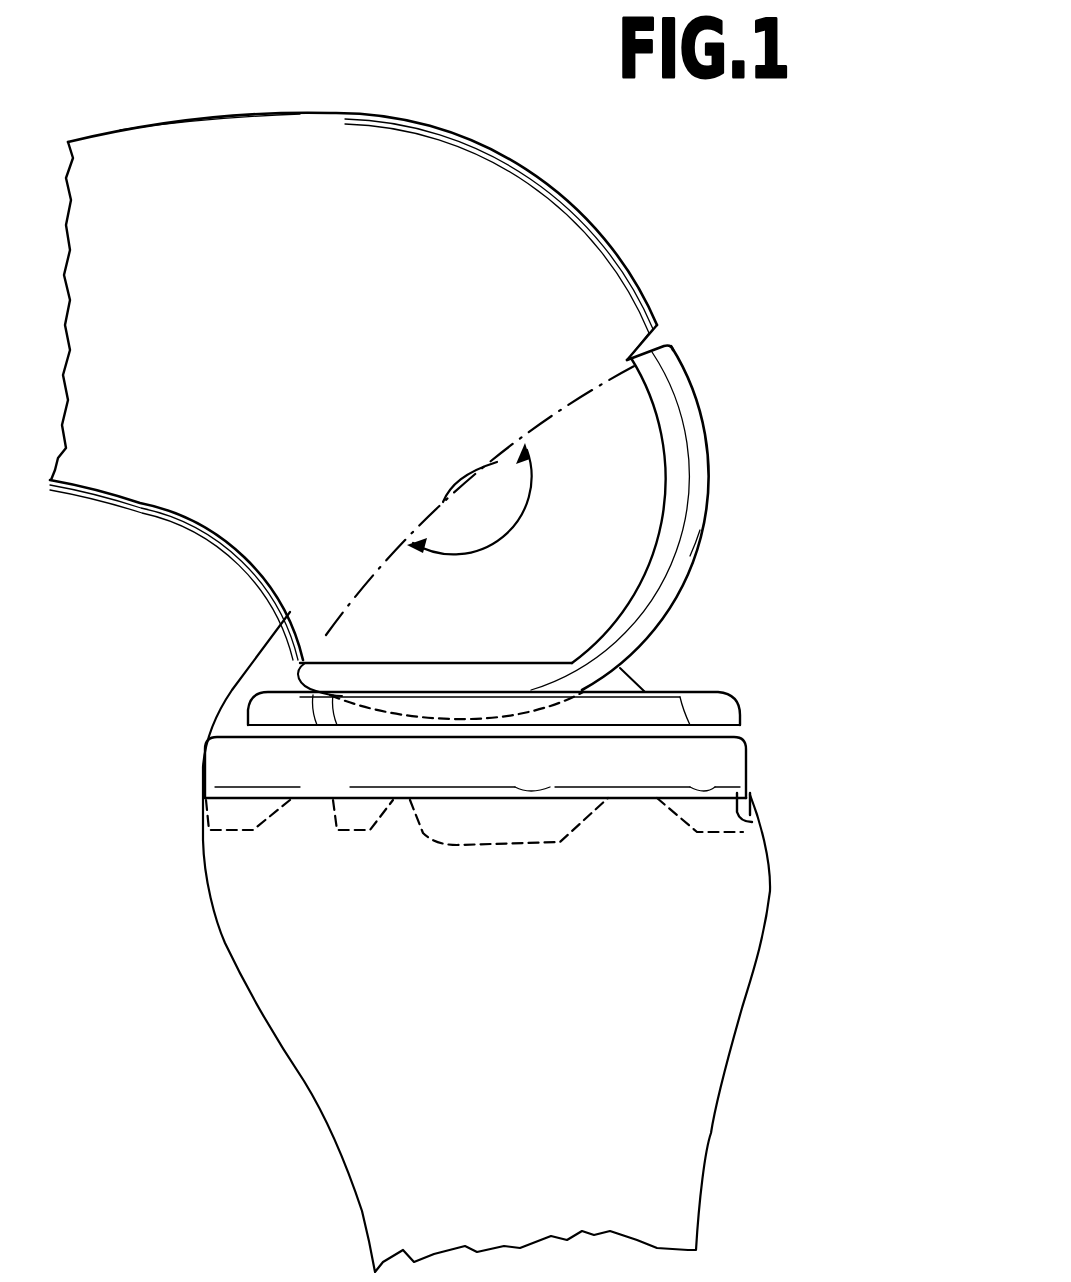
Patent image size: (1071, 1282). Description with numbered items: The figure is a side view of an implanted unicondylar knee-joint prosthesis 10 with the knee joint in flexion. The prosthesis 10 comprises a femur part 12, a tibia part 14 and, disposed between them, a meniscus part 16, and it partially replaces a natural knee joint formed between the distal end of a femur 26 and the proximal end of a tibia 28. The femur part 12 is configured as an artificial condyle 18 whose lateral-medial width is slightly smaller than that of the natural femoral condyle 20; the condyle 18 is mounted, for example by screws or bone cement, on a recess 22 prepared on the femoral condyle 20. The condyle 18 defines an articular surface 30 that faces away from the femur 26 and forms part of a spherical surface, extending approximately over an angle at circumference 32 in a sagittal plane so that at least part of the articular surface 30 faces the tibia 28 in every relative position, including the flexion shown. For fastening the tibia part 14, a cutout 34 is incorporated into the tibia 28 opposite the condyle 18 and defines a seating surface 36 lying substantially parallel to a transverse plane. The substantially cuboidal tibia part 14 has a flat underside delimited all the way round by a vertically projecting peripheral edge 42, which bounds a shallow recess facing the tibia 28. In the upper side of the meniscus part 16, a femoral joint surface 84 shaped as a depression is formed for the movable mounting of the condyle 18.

The knee-joint prosthesis 10 is at (711, 615).
The femur part 12 is at (706, 420).
The tibia part 14 is at (207, 757).
The meniscus part 16 is at (250, 712).
The artificial condyle 18 is at (697, 488).
The natural femoral condyle 20 is at (401, 401).
The recess 22 is at (653, 373).
The femur 26 is at (203, 145).
The tibia 28 is at (700, 1086).
The articular surface 30 is at (703, 543).
The angle at circumference 32 is at (510, 535).
The cutout 34 is at (272, 647).
The seating surface 36 is at (470, 800).
The peripheral edge 42 is at (746, 821).
The femoral joint surface 84 is at (518, 713).